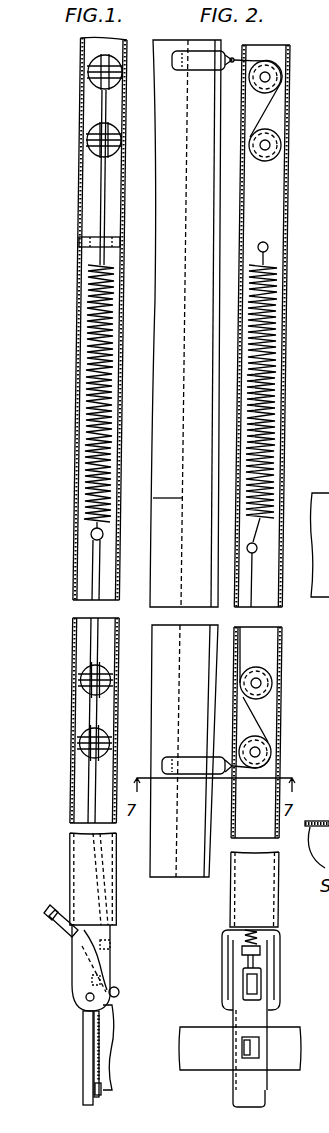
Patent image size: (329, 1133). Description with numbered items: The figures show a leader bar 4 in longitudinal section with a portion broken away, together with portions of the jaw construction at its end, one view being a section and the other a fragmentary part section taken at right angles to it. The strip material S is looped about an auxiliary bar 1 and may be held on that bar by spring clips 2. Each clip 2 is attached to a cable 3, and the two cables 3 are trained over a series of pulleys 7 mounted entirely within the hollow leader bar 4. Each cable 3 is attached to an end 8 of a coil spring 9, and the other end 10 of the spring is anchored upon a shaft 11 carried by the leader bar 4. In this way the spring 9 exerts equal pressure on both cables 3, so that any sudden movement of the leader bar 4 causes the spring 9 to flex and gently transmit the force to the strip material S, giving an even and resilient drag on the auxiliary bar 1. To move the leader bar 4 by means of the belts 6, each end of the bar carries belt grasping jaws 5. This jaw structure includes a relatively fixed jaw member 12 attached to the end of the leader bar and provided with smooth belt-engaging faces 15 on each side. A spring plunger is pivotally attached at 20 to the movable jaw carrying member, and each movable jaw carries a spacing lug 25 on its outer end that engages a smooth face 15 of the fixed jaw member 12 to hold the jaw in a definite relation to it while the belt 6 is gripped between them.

In FIG. 2, the strip material S is at (164, 400).
In FIG. 2, the auxiliary bar 1 is at (182, 497).
In FIG. 2, the clips 2 is at (193, 67).
In FIG. 1, the cables 3 is at (96, 714).
In FIG. 2, the cables 3 is at (240, 60).
In FIG. 1, the leader bar 4 is at (77, 302).
In FIG. 2, the leader bar 4 is at (284, 305).
In FIG. 2, the belt grasping jaws 5 is at (281, 990).
In FIG. 1, the belts 6 is at (103, 1030).
In FIG. 2, the belts 6 is at (290, 1043).
In FIG. 1, the pulleys 7 is at (88, 78).
In FIG. 2, the pulleys 7 is at (279, 77).
In FIG. 1, the end of coil spring 8 is at (90, 538).
In FIG. 2, the end of coil spring 8 is at (258, 545).
In FIG. 1, the coil spring 9 is at (90, 440).
In FIG. 2, the coil spring 9 is at (271, 390).
In FIG. 1, the other end of coil spring 10 is at (106, 255).
In FIG. 2, the other end of coil spring 10 is at (268, 258).
In FIG. 1, the shaft 11 is at (80, 241).
In FIG. 2, the shaft 11 is at (268, 244).
In FIG. 1, the relatively fixed jaw member 12 is at (92, 1088).
In FIG. 2, the relatively fixed jaw member 12 is at (266, 1098).
In FIG. 1, the belt-engaging faces 15 is at (83, 1058).
In FIG. 2, the belt-engaging faces 15 is at (233, 1097).
In FIG. 1, the pivotal attachment of spring plunger 20 is at (118, 992).
In FIG. 1, the spacing lug 25 is at (99, 1092).